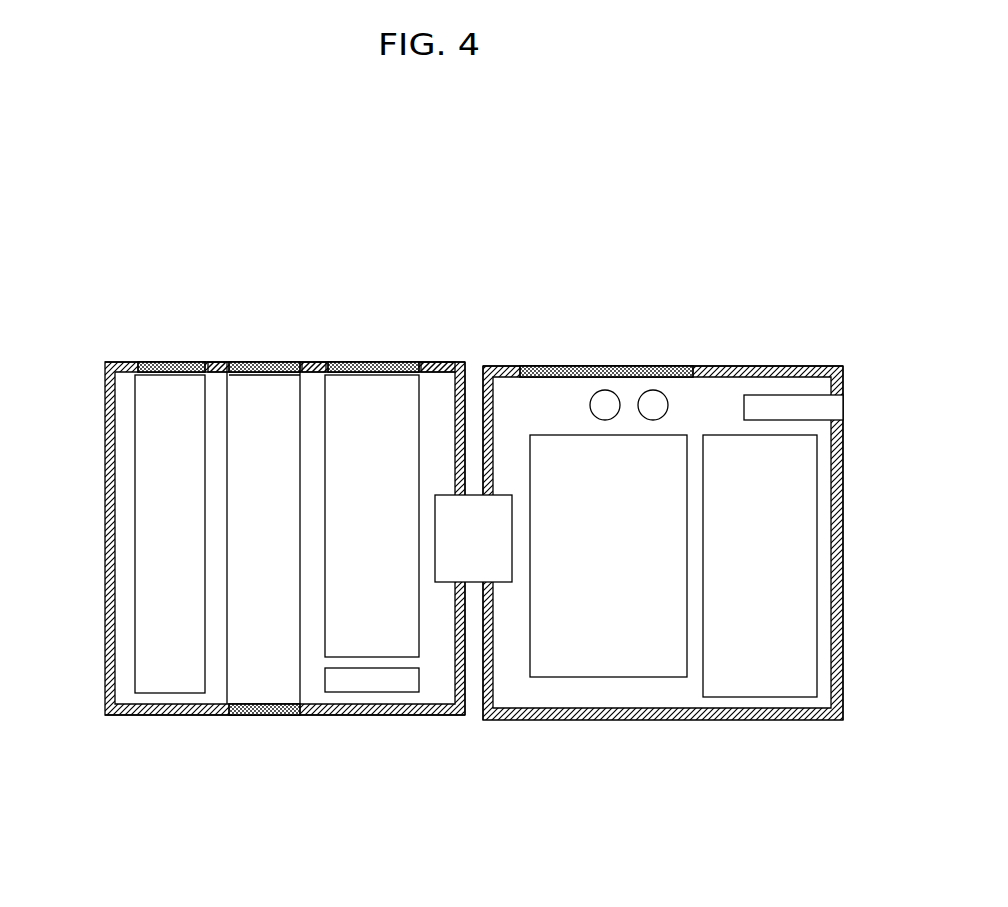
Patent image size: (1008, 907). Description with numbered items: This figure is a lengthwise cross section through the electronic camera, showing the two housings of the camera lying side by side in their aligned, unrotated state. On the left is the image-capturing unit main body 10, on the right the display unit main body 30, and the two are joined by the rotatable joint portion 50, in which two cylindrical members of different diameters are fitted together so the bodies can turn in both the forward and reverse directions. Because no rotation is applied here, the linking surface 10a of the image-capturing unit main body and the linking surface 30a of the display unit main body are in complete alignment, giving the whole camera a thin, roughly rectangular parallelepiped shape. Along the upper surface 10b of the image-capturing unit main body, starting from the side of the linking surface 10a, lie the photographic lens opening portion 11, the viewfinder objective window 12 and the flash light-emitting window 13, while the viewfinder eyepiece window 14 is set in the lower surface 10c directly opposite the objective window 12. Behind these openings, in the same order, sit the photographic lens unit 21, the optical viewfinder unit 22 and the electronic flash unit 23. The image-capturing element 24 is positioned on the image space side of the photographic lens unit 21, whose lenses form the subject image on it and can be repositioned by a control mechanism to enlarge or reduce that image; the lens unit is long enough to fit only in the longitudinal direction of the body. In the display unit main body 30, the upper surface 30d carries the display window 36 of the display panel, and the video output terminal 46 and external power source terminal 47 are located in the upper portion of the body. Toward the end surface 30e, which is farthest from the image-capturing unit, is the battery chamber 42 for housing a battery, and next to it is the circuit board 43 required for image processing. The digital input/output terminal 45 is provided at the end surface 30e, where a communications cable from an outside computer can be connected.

The image-capturing unit main body 10 is at (366, 262).
The linking surface 10a is at (467, 692).
The top surface of camera body 10b is at (118, 362).
The lower surface 10c is at (158, 715).
The photographic lens opening portion 11 is at (378, 362).
The viewfinder objective window 12 is at (265, 362).
The flash light-emitting window 13 is at (170, 362).
The viewfinder eyepiece window 14 is at (258, 715).
The photographic lens unit 21 is at (407, 445).
The optical viewfinder unit 22 is at (284, 443).
The electronic flash unit 23 is at (185, 442).
The image-capturing element 24 is at (371, 684).
The display unit main body 30 is at (755, 262).
The linking surface 30a is at (473, 367).
The upper surface 30d is at (790, 366).
The end surface 30e is at (842, 620).
The display window 36 is at (556, 366).
The battery chamber 42 is at (757, 683).
The circuit board 43 is at (620, 667).
The digital input/output terminal 45 is at (832, 411).
The video output terminal 46 is at (652, 398).
The external power source terminal 47 is at (605, 398).
The rotatable joint portion 50 is at (497, 558).